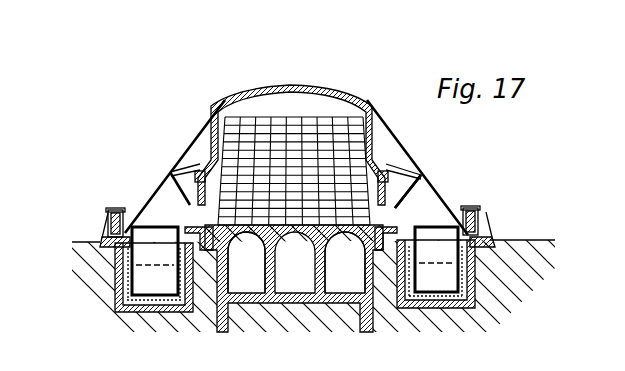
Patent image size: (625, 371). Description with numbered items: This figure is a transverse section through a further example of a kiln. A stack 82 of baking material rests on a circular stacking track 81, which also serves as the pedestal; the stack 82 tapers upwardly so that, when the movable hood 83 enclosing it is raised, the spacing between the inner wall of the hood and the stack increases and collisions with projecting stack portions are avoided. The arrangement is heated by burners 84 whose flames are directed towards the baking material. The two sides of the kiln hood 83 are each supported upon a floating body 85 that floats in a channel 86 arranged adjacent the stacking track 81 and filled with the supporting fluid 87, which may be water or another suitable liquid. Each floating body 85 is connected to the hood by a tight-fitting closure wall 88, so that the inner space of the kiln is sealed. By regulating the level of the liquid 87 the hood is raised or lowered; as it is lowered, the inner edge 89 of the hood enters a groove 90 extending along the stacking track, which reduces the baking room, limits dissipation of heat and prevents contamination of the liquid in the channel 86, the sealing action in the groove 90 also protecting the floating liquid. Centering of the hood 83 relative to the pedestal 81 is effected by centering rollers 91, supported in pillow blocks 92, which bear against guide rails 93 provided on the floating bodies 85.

The circular stacking track 81 is at (417, 200).
The stack of baking material 82 is at (342, 128).
The movable hood 83 is at (320, 95).
The burners 84 is at (388, 168).
The floating body 85 is at (147, 240).
The channel 86 is at (117, 258).
The supporting fluid 87 is at (118, 287).
The tight-fitting closure wall 88 is at (170, 172).
The inner edge of the hood 89 is at (227, 258).
The groove 90 is at (226, 244).
The centering rollers 91 is at (108, 218).
The pillow blocks 92 is at (102, 236).
The guide rails 93 is at (118, 212).